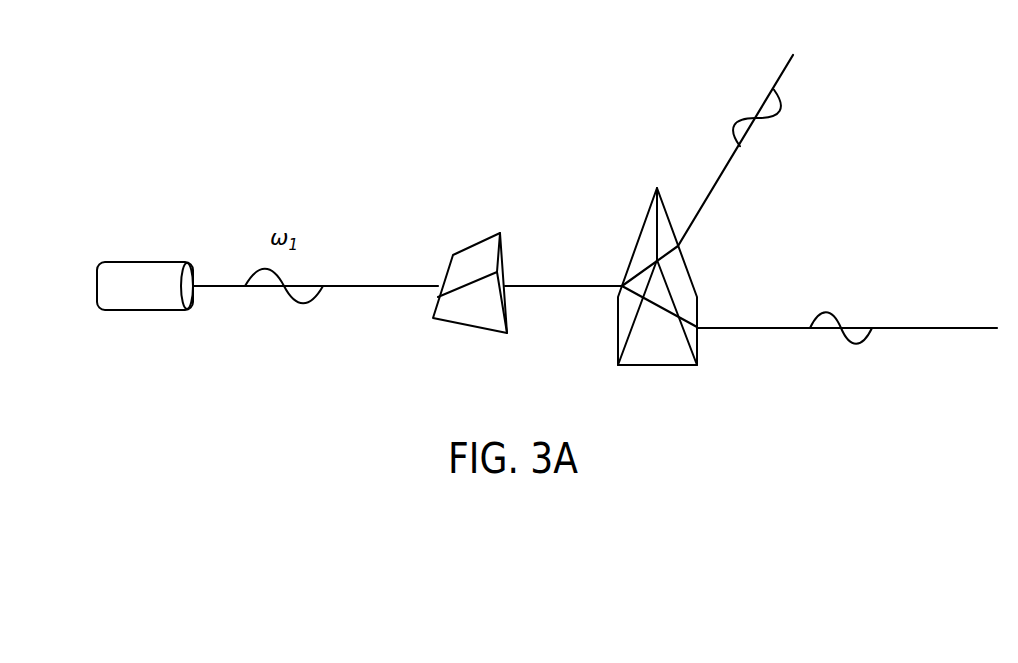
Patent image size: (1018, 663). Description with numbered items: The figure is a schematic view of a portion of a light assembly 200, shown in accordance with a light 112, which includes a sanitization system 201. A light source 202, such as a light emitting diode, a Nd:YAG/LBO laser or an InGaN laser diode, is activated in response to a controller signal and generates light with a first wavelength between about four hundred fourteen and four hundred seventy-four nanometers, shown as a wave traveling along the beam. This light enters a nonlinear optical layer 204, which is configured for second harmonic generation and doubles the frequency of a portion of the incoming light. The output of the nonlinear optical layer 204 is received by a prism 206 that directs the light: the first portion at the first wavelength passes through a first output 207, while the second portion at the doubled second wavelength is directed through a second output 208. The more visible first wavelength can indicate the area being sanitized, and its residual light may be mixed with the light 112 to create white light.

The light 112 is at (524, 111).
The light assembly 200 is at (386, 89).
The sanitization system 201 is at (270, 110).
The light source 202 is at (125, 287).
The nonlinear optical layer 204 is at (472, 268).
The prism 206 is at (648, 260).
The first output 207 is at (700, 325).
The second output 208 is at (676, 242).